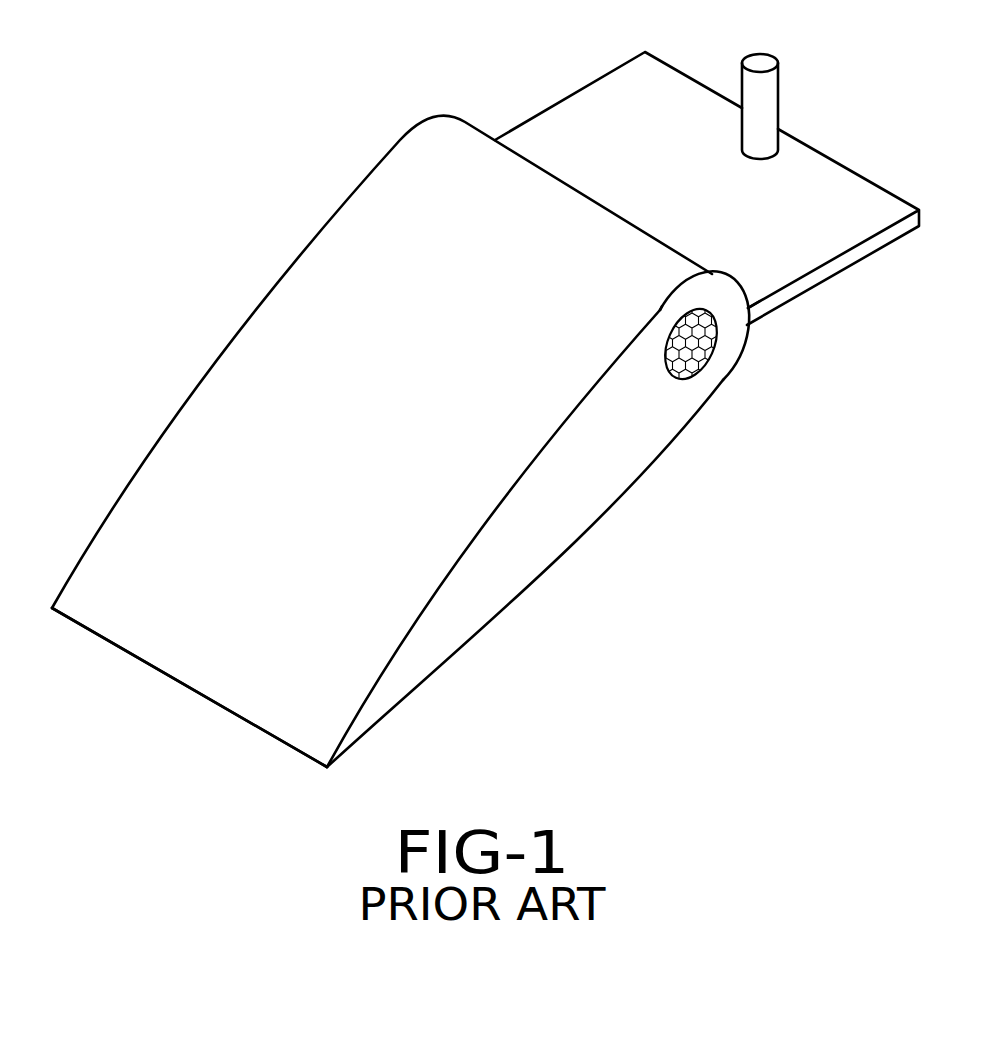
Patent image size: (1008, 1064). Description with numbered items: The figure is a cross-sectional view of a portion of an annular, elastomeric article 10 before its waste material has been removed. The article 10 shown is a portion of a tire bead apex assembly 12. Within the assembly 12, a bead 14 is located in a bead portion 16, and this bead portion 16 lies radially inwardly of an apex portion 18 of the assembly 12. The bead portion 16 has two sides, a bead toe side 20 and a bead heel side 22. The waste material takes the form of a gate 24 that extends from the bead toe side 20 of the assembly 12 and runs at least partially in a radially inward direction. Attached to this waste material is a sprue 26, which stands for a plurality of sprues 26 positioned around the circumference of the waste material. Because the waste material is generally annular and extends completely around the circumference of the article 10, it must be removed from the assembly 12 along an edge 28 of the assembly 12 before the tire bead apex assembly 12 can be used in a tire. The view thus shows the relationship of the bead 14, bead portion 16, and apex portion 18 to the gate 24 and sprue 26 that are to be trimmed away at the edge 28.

The annular elastomeric article 10 is at (673, 618).
The tire bead apex assembly 12 is at (355, 448).
The bead 14 is at (692, 363).
The bead portion 16 is at (673, 438).
The apex portion 18 is at (453, 665).
The bead toe side 20 is at (742, 342).
The bead heel side 22 is at (660, 310).
The gate 24 is at (623, 158).
The sprue 26 is at (767, 107).
The edge 28 is at (752, 307).